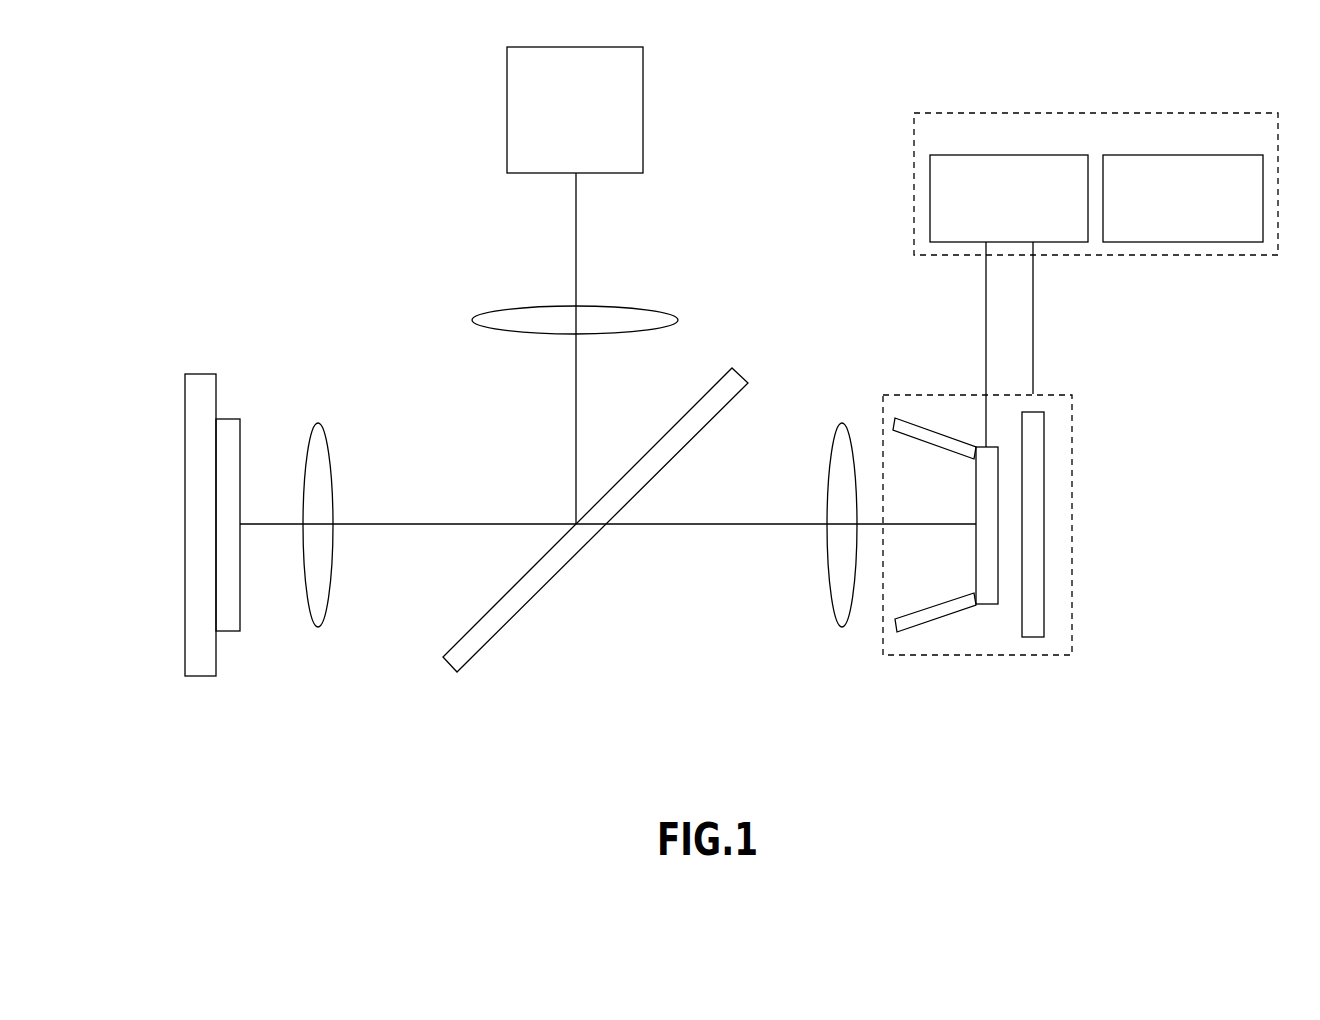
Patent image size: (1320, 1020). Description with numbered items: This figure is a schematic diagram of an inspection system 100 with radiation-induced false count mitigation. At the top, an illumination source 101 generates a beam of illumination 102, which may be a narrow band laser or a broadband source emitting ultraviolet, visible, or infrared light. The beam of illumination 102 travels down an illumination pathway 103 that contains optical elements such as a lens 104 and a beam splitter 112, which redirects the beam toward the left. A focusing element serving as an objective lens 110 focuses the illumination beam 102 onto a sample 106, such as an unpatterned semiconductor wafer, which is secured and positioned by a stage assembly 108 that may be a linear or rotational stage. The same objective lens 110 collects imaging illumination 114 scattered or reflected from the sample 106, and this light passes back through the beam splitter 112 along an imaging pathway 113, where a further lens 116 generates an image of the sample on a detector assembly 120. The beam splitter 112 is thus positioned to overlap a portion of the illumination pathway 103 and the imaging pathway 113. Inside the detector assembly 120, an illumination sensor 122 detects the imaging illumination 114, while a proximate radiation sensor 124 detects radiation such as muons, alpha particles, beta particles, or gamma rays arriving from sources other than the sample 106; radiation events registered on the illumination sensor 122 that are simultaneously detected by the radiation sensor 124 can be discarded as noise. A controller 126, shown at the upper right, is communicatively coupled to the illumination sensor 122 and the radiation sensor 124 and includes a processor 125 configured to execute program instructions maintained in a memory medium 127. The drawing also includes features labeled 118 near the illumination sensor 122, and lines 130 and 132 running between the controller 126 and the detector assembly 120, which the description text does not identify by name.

The inspection system 100 is at (274, 121).
The illumination source 101 is at (596, 126).
The beam of illumination 102 is at (576, 246).
The illumination pathway 103 is at (449, 412).
The lens 104 is at (480, 318).
The sample 106 is at (227, 418).
The stage assembly 108 is at (200, 677).
The objective lens 110 is at (318, 628).
The beam splitter 112 is at (450, 668).
The imaging pathway 113 is at (660, 631).
The imaging illumination 114 is at (716, 526).
The lens 116 is at (842, 628).
The aperture blades 118 is at (920, 418).
The detector assembly 120 is at (1048, 656).
The illumination sensor 122 is at (986, 605).
The radiation sensor 124 is at (1033, 638).
The processor 125 is at (972, 183).
The controller 126 is at (957, 139).
The memory medium 127 is at (1147, 183).
The detector signal line 130 is at (1033, 322).
The aperture control line 132 is at (986, 322).